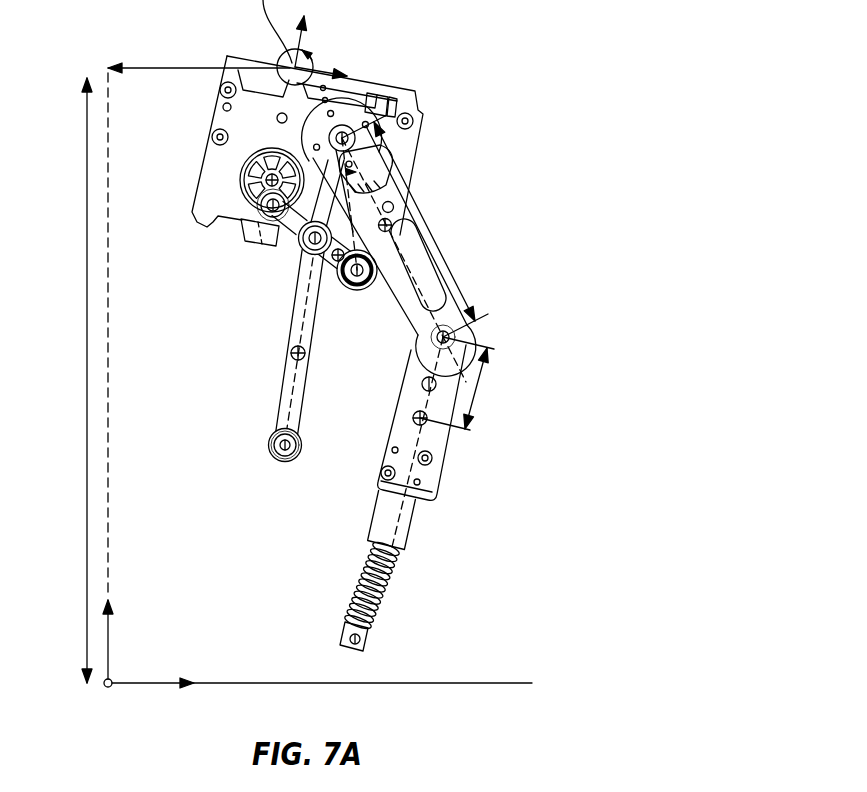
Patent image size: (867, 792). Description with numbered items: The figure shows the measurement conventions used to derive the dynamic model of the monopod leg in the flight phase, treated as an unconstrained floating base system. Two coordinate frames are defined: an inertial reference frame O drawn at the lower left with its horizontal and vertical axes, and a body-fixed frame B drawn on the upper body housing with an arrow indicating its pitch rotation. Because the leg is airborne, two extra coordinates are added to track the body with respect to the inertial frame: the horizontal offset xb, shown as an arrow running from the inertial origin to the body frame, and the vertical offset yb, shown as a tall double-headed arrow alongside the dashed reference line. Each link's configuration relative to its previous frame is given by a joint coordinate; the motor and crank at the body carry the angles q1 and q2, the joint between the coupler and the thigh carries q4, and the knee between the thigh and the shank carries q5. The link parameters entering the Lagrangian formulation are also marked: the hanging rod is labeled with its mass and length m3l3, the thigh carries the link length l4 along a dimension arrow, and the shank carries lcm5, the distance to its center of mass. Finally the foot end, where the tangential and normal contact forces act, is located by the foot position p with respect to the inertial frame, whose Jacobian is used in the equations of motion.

The body-fixed frame B is at (327, 42).
The inertial reference frame O is at (317, 378).
The body x-coordinate xb is at (170, 64).
The body y-coordinate yb is at (86, 367).
The link 1 joint coordinate q1 is at (271, 245).
The link 2 joint coordinate q2 is at (280, 256).
The mass and length of link 3 m3l3 is at (291, 355).
The link 4 joint coordinate q4 is at (339, 262).
The link 4 length l4 is at (417, 203).
The link 5 joint coordinate q5 is at (455, 381).
The center of mass position of link 5 lcm5 is at (470, 392).
The foot position p is at (372, 638).